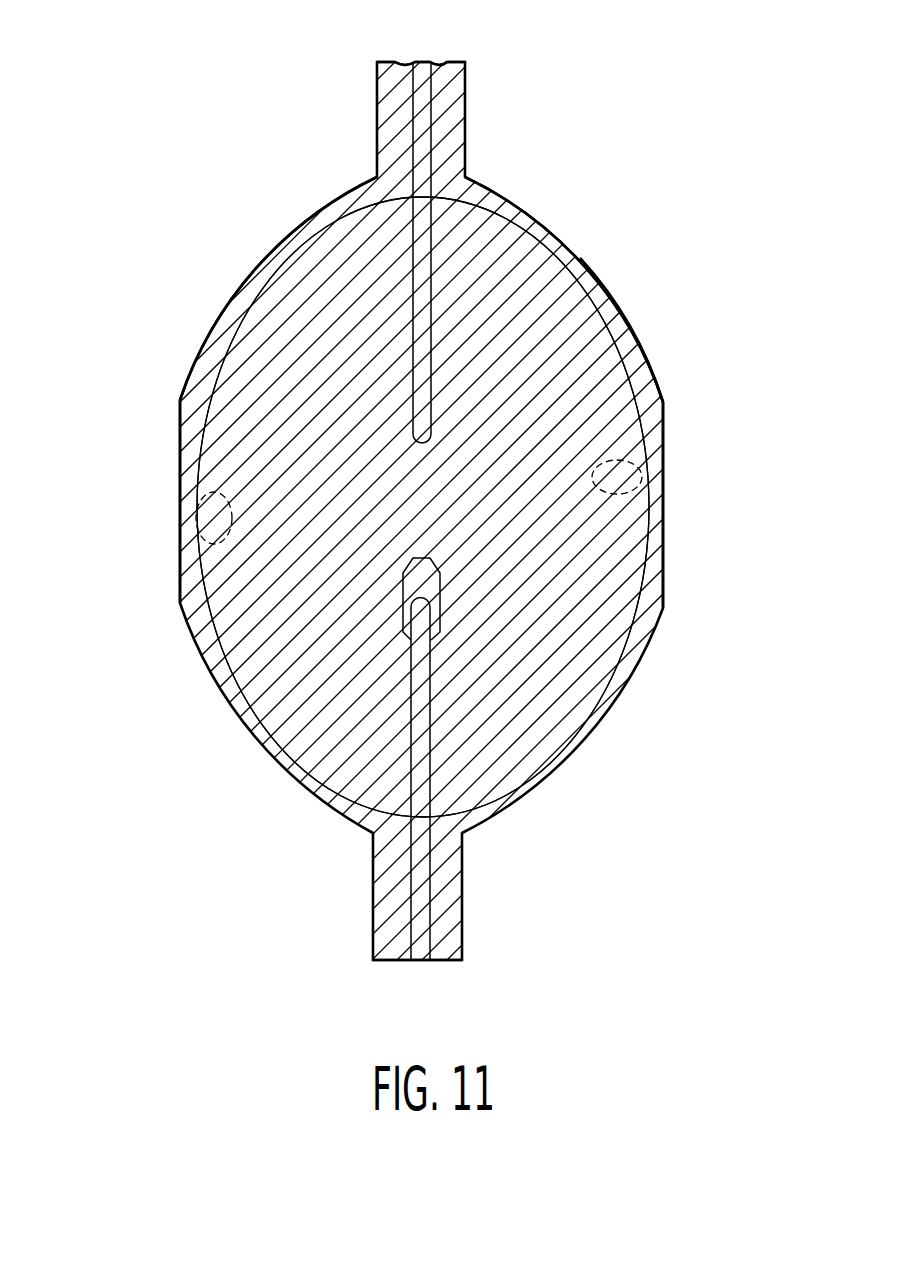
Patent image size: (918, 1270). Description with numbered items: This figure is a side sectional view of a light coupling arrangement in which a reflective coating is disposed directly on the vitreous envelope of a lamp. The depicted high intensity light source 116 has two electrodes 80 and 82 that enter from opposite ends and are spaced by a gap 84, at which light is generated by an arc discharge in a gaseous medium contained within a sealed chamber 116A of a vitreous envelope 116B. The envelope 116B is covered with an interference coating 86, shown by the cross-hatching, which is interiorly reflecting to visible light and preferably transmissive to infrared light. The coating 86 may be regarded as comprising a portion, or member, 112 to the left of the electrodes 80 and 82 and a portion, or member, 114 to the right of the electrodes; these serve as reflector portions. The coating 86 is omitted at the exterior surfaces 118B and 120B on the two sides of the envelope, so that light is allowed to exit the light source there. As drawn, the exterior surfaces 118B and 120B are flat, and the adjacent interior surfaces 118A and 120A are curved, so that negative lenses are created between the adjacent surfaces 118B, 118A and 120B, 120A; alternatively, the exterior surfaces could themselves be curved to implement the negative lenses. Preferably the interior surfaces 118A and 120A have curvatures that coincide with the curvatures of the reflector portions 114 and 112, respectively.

The electrode 80 is at (418, 62).
The electrode 82 is at (420, 963).
The gap 84 is at (413, 505).
The interference coating 86 is at (253, 282).
The portion of coating (reflector portion) 112 is at (318, 365).
The portion of coating (reflector portion) 114 is at (498, 337).
The high intensity light source 116 is at (265, 141).
The sealed chamber 116A is at (498, 283).
The vitreous envelope 116B is at (630, 330).
The interior surface 118A is at (600, 492).
The exterior surface 118B is at (663, 440).
The interior surface 120A is at (180, 541).
The exterior surface 120B is at (180, 462).